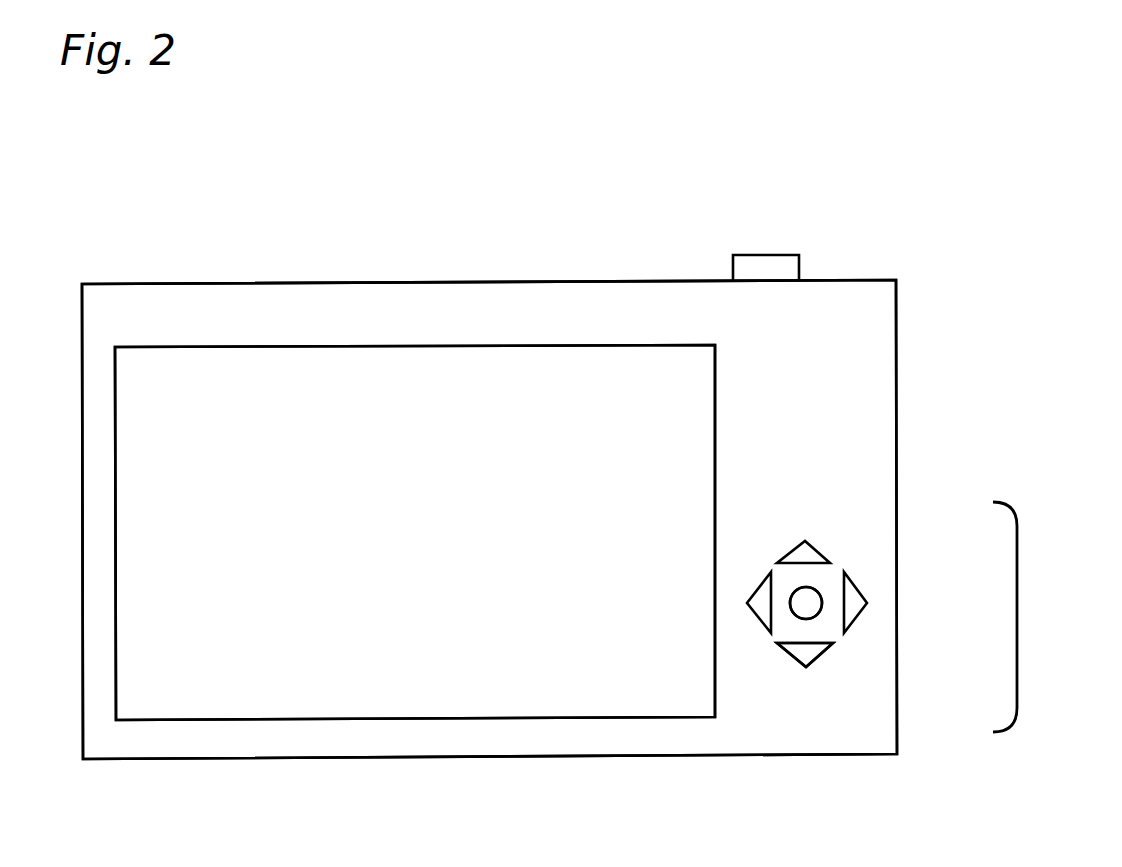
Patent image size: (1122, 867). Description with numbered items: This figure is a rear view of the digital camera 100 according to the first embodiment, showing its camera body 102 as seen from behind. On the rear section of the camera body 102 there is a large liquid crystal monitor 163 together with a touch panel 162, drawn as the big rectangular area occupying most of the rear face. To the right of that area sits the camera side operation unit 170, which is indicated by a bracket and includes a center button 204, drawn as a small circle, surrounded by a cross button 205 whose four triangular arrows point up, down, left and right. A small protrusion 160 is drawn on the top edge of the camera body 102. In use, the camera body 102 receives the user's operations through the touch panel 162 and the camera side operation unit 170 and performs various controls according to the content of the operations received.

The digital camera 100 is at (556, 144).
The camera body 102 is at (340, 298).
The release button 160 is at (789, 263).
The touch panel 162 is at (354, 633).
The liquid crystal monitor 163 is at (297, 517).
The camera side operation unit 170 is at (913, 617).
The center button 204 is at (808, 606).
The cross button 205 is at (807, 653).